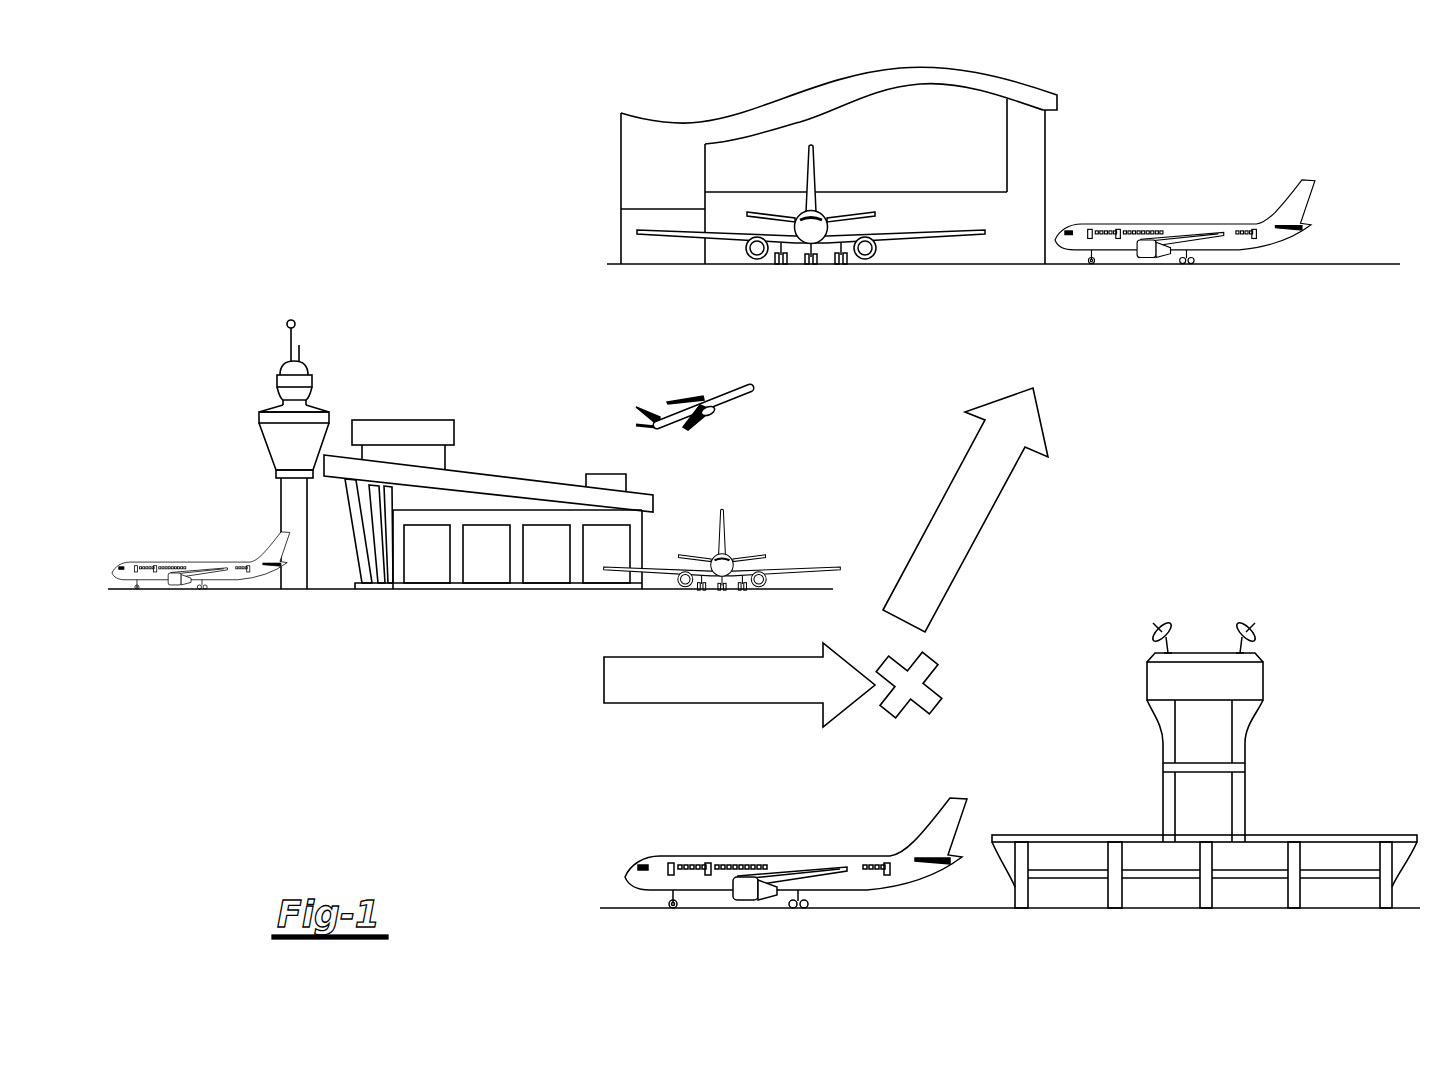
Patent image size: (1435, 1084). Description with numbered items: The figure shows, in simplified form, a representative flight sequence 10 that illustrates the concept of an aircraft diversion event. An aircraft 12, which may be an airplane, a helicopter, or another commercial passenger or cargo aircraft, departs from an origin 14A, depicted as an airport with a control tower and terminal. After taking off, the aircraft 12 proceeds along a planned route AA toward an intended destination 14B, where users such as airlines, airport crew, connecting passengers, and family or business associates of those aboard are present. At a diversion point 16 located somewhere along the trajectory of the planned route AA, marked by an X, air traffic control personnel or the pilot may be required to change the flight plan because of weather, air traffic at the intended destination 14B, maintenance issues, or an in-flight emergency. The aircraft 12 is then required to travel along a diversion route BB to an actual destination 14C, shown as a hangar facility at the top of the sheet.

The flight sequence 10 is at (313, 128).
The aircraft 12 is at (727, 388).
The origin 14A is at (540, 373).
The intended destination 14B is at (1334, 719).
The actual destination 14C is at (1135, 86).
The diversion point 16 is at (885, 712).